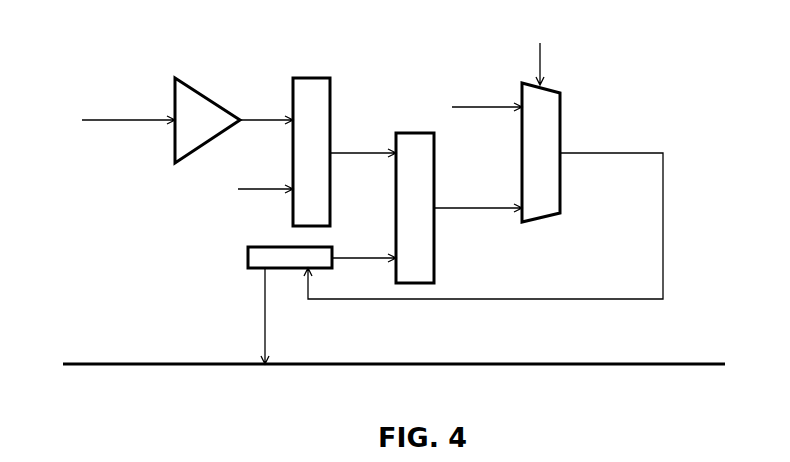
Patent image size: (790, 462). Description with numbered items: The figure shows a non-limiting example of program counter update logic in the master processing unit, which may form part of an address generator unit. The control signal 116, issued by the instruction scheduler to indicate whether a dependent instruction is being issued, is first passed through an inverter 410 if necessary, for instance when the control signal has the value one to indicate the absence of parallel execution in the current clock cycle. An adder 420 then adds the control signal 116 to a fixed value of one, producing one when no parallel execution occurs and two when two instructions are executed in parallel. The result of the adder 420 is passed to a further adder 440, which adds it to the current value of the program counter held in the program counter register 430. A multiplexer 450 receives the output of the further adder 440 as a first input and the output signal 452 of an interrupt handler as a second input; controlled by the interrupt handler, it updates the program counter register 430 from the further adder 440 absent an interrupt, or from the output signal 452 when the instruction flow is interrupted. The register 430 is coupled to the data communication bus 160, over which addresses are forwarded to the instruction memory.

The control signal 116 is at (125, 118).
The inverter 410 is at (195, 103).
The adder 420 is at (310, 100).
The further adder 440 is at (413, 145).
The multiplexer 450 is at (548, 195).
The output signal 452 is at (485, 107).
The program counter register 430 is at (248, 258).
The data communication bus 160 is at (97, 362).